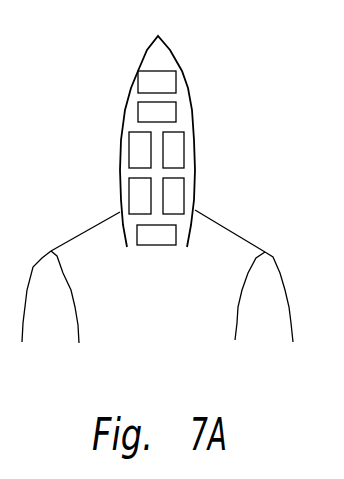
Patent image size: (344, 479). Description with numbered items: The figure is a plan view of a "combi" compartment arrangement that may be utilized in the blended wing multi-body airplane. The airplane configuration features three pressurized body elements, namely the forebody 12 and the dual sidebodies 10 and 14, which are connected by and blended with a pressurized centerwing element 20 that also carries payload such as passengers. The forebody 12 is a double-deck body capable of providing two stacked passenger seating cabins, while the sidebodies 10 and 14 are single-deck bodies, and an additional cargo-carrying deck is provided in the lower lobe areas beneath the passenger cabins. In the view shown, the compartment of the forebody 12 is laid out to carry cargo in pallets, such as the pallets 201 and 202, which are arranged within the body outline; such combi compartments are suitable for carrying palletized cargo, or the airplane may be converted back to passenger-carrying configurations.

The sidebody 10 is at (77, 327).
The forebody 12 is at (190, 93).
The sidebody 14 is at (240, 318).
The centerwing element 20 is at (227, 233).
The pallet 201 is at (133, 195).
The pallet 202 is at (180, 143).